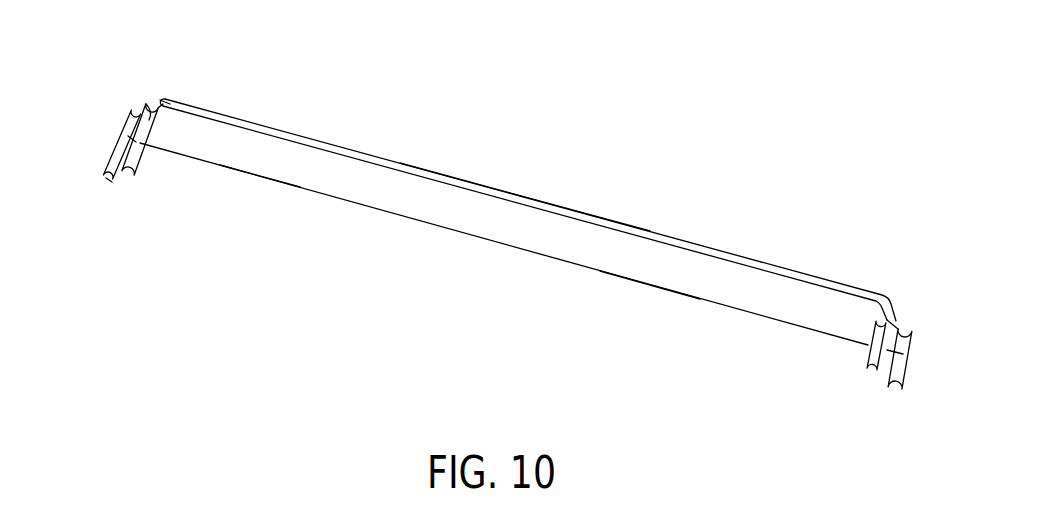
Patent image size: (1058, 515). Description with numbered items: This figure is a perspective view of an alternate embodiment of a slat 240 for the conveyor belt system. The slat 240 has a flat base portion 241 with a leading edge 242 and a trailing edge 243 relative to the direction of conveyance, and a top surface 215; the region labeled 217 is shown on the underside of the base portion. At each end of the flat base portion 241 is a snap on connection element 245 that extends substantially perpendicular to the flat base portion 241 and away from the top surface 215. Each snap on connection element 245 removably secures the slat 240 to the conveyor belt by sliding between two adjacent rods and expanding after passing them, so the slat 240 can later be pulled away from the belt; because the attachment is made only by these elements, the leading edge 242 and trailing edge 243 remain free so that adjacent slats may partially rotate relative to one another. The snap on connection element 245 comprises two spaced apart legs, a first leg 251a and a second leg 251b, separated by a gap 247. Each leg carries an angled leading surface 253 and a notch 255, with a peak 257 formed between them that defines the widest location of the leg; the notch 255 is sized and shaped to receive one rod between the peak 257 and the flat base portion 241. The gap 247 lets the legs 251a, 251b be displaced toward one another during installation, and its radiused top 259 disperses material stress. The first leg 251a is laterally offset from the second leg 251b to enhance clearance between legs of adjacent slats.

The slat 240 is at (737, 165).
The leading edge 242 is at (386, 158).
The top surface 215 is at (598, 218).
The flat base portion 241 is at (372, 207).
The trailing edge 243 is at (262, 185).
The lower bar 217 is at (648, 282).
The snap on connection element 245 is at (105, 90).
The gap 247 is at (124, 187).
The first leg 251a is at (130, 140).
The second leg 251b is at (115, 187).
The angled leading surface 253 is at (116, 158).
The notch 255 is at (157, 106).
The peak 257 is at (147, 110).
The radiused top 259 is at (177, 103).